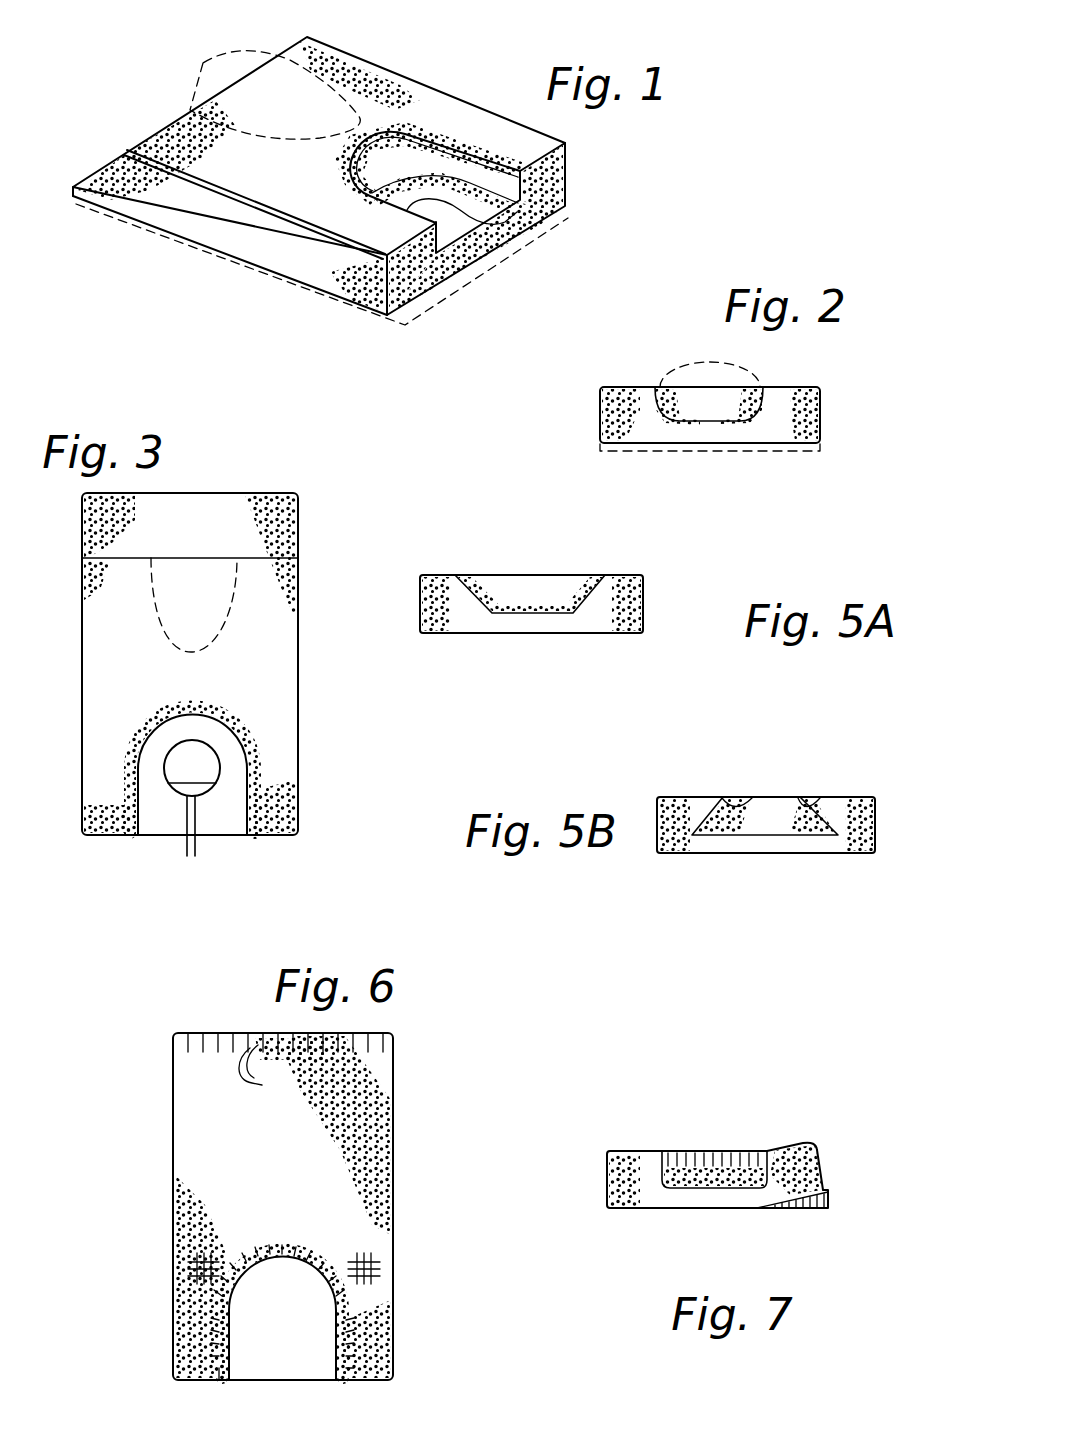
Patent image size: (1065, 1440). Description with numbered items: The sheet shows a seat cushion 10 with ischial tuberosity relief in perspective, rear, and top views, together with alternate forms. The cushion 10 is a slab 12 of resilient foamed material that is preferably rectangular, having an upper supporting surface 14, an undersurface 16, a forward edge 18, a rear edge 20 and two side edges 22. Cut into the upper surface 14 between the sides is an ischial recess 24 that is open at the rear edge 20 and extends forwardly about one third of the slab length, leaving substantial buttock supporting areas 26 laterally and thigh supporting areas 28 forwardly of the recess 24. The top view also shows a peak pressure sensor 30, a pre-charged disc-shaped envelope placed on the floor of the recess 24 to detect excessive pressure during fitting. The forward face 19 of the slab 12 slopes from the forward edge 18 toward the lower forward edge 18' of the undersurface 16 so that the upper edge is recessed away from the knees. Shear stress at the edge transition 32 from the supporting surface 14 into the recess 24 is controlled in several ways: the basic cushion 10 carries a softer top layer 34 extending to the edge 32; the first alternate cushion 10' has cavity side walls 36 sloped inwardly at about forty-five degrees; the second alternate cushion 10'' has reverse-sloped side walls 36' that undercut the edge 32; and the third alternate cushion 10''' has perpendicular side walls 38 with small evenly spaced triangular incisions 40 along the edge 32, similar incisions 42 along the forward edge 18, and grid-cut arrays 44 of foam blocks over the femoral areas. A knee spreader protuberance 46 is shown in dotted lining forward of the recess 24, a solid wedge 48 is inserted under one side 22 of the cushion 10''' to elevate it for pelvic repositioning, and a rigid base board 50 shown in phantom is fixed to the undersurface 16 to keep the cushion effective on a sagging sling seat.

In FIG. 1, the seat cushion 10 is at (451, 37).
In FIG. 2, the seat cushion 10 is at (877, 348).
In FIG. 3, the seat cushion 10 is at (344, 457).
In FIG. 5A, the cushion 10' is at (631, 679).
In FIG. 5B, the cushion 10'' is at (753, 924).
In FIG. 6, the alternate cushion 10''' is at (91, 1131).
In FIG. 7, the alternate cushion 10''' is at (866, 1088).
In FIG. 1, the slab 12 is at (303, 262).
In FIG. 2, the slab 12 is at (778, 447).
In FIG. 3, the slab 12 is at (297, 612).
In FIG. 5A, the slab 12 is at (644, 622).
In FIG. 5B, the slab 12 is at (878, 817).
In FIG. 6, the slab 12 is at (283, 1206).
In FIG. 7, the slab 12 is at (717, 1175).
In FIG. 1, the upper supporting surface 14 is at (186, 144).
In FIG. 2, the upper supporting surface 14 is at (648, 386).
In FIG. 3, the upper supporting surface 14 is at (205, 699).
In FIG. 5A, the upper supporting surface 14 is at (437, 575).
In FIG. 5B, the upper supporting surface 14 is at (673, 797).
In FIG. 6, the upper supporting surface 14 is at (278, 1171).
In FIG. 7, the upper supporting surface 14 is at (637, 1149).
In FIG. 2, the undersurface 16 is at (693, 445).
In FIG. 5A, the undersurface 16 is at (472, 637).
In FIG. 5B, the undersurface 16 is at (713, 855).
In FIG. 7, the undersurface 16 is at (627, 1210).
In FIG. 1, the forward edge 18 is at (264, 28).
In FIG. 3, the forward edge 18 is at (190, 534).
In FIG. 6, the forward edge 18 is at (285, 1010).
In FIG. 3, the lower forward edge 18' is at (214, 472).
In FIG. 3, the forward face 19 is at (213, 536).
In FIG. 1, the rear edge 20 is at (476, 258).
In FIG. 2, the rear edge 20 is at (797, 421).
In FIG. 3, the rear edge 20 is at (268, 832).
In FIG. 5A, the rear edge 20 is at (592, 608).
In FIG. 5B, the rear edge 20 is at (677, 855).
In FIG. 6, the rear edge 20 is at (188, 1378).
In FIG. 1, the side edges 22 is at (475, 104).
In FIG. 2, the side edges 22 is at (822, 407).
In FIG. 3, the side edges 22 is at (80, 662).
In FIG. 5A, the side edges 22 is at (645, 605).
In FIG. 5B, the side edges 22 is at (656, 838).
In FIG. 6, the side edges 22 is at (173, 1088).
In FIG. 7, the side edges 22 is at (820, 1158).
In FIG. 1, the ischial recess 24 is at (525, 203).
In FIG. 2, the ischial recess 24 is at (708, 418).
In FIG. 3, the ischial recess 24 is at (212, 818).
In FIG. 5A, the ischial recess 24 is at (550, 610).
In FIG. 5B, the ischial recess 24 is at (760, 833).
In FIG. 6, the ischial recess 24 is at (274, 1361).
In FIG. 7, the ischial recess 24 is at (710, 1188).
In FIG. 1, the buttock supporting areas 26 is at (523, 140).
In FIG. 3, the buttock supporting areas 26 is at (111, 800).
In FIG. 3, the thigh supporting areas 28 is at (128, 610).
In FIG. 3, the peak pressure sensor 30 is at (170, 785).
In FIG. 1, the edge transition 32 is at (487, 212).
In FIG. 2, the edge transition 32 is at (600, 404).
In FIG. 3, the edge transition 32 is at (246, 750).
In FIG. 5A, the edge transition 32 is at (455, 575).
In FIG. 5B, the edge transition 32 is at (722, 797).
In FIG. 6, the edge transition 32 is at (282, 1319).
In FIG. 7, the edge transition 32 is at (658, 1151).
In FIG. 1, the top layer 34 is at (290, 218).
In FIG. 3, the cavity side walls 36 is at (315, 784).
In FIG. 5A, the cavity side walls 36 is at (576, 555).
In FIG. 5B, the side walls 36' is at (794, 758).
In FIG. 7, the side walls 38 is at (677, 1190).
In FIG. 6, the incisions 40 is at (313, 1244).
In FIG. 7, the incisions 40 is at (743, 1151).
In FIG. 6, the incisions 42 is at (262, 1076).
In FIG. 6, the arrays 44 is at (379, 1262).
In FIG. 1, the knee spreader protuberance 46 is at (203, 63).
In FIG. 2, the knee spreader protuberance 46 is at (709, 360).
In FIG. 3, the knee spreader protuberance 46 is at (168, 635).
In FIG. 7, the wedge 48 is at (828, 1203).
In FIG. 1, the rigid base board 50 is at (405, 325).
In FIG. 2, the rigid base board 50 is at (727, 451).